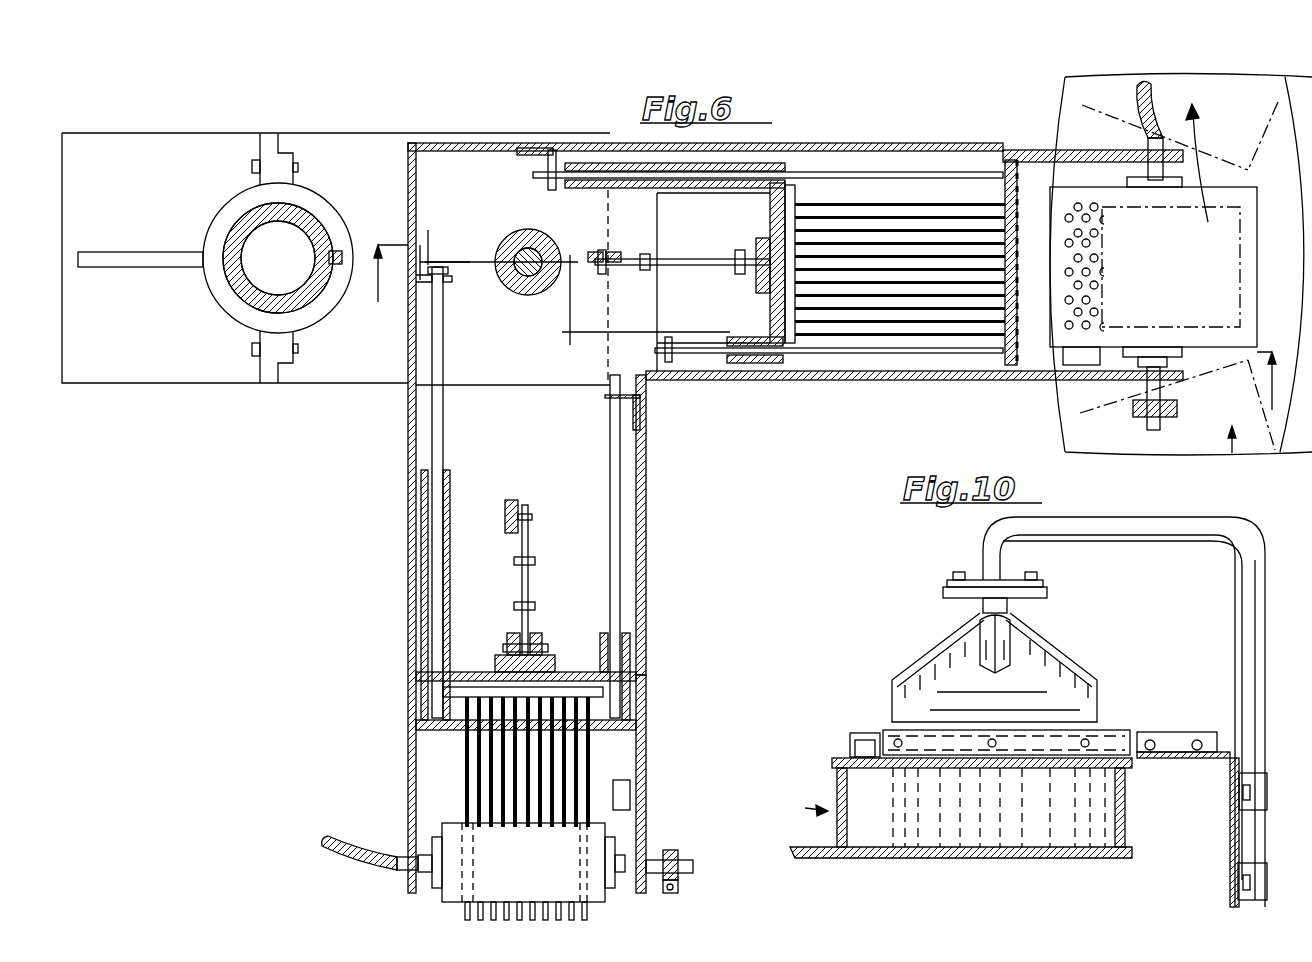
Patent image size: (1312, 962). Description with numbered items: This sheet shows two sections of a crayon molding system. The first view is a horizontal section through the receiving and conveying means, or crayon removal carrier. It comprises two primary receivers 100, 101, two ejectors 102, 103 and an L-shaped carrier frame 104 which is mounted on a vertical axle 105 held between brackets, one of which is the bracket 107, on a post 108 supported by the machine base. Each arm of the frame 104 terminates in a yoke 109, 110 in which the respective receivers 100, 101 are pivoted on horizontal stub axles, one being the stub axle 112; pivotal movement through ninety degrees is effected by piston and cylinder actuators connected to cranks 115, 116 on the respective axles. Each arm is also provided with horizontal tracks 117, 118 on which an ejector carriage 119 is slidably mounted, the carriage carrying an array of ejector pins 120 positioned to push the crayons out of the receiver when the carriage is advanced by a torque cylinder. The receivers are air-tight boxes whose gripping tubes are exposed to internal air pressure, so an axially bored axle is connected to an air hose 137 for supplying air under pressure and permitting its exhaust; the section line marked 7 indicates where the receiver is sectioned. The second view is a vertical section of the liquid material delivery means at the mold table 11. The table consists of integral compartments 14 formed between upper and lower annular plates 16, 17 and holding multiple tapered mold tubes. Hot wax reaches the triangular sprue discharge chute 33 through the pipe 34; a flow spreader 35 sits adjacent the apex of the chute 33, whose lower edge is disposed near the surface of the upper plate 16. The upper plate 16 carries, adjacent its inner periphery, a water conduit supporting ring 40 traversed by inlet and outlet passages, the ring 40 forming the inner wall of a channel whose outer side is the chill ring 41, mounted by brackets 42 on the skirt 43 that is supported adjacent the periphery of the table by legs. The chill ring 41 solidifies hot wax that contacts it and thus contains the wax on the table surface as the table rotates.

In FIG. 6, the bracket 107 is at (345, 372).
In FIG. 6, the post 108 is at (247, 297).
In FIG. 6, the vertical axle 105 is at (516, 279).
In FIG. 6, the horizontal track 117 is at (875, 173).
In FIG. 6, the ejector carriage 119 is at (768, 312).
In FIG. 6, the ejector pins 120 is at (950, 232).
In FIG. 6, the horizontal track 118 is at (853, 353).
In FIG. 6, the ejector 102 is at (766, 368).
In FIG. 6, the yoke 109 is at (1043, 381).
In FIG. 6, the primary receiver 100 is at (1157, 265).
In FIG. 6, the air hose 137 is at (1148, 113).
In FIG. 6, the horizontal stub axle 112 is at (1182, 358).
In FIG. 6, the crank 115 is at (1138, 406).
In FIG. 6, the L-shaped carrier frame 104 is at (650, 410).
In FIG. 6, the ejector 103 is at (632, 668).
In FIG. 6, the yoke 110 is at (641, 772).
In FIG. 6, the primary receiver 101 is at (521, 808).
In FIG. 6, the crank 116 is at (668, 852).
In FIG. 6, the section line 7 is at (825, 327).
In FIG. 6, the mold table 11 is at (1237, 454).
In FIG. 10, the mold table 11 is at (805, 808).
In FIG. 10, the pipe 34 is at (1186, 530).
In FIG. 10, the flow spreader 35 is at (1002, 650).
In FIG. 10, the sprue discharge chute 33 is at (918, 712).
In FIG. 10, the water conduit supporting ring 40 is at (852, 745).
In FIG. 10, the chill ring 41 is at (1118, 736).
In FIG. 10, the brackets 42 is at (1178, 752).
In FIG. 10, the skirt 43 is at (1228, 770).
In FIG. 10, the upper annular plate 16 is at (832, 765).
In FIG. 10, the compartment 14 is at (981, 807).
In FIG. 10, the lower annular plate 17 is at (834, 856).